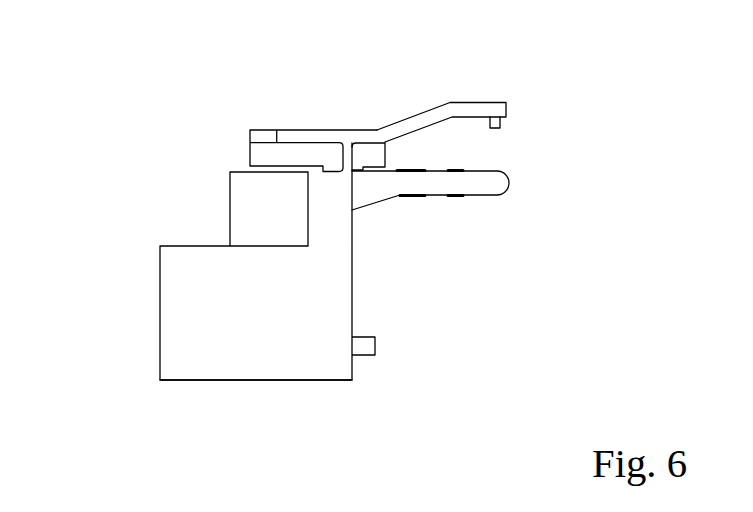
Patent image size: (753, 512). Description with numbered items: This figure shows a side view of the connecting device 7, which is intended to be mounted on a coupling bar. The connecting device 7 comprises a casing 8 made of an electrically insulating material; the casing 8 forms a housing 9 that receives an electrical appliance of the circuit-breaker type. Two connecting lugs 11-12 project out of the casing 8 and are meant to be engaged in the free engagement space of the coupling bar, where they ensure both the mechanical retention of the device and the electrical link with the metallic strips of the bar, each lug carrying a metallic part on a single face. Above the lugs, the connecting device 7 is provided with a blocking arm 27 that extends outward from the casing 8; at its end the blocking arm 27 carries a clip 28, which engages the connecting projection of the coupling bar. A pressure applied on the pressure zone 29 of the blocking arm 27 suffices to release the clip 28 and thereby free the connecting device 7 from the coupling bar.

The connecting device 7 is at (186, 119).
The casing 8 is at (256, 378).
The housing 9 is at (150, 305).
The connecting lugs 11-12 is at (453, 197).
The blocking arm 27 is at (420, 103).
The clip 28 is at (496, 123).
The pressure zone 29 is at (267, 131).